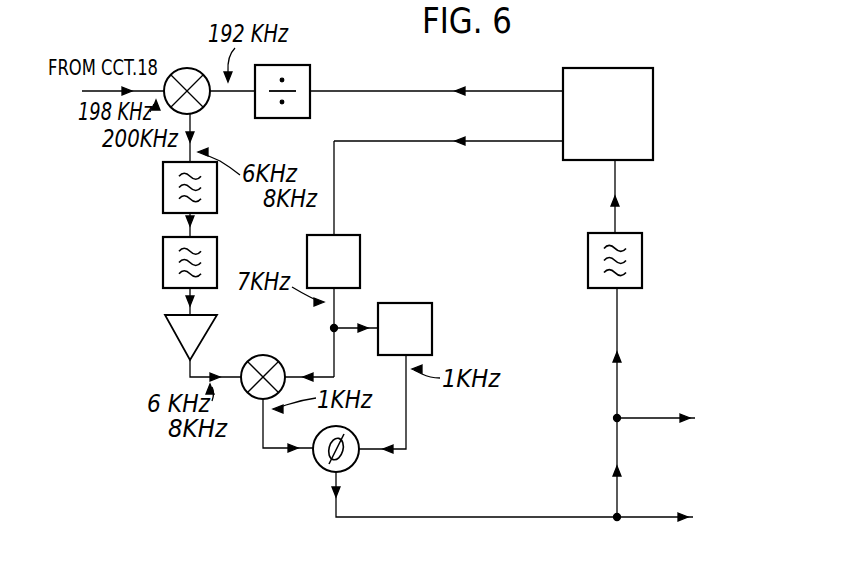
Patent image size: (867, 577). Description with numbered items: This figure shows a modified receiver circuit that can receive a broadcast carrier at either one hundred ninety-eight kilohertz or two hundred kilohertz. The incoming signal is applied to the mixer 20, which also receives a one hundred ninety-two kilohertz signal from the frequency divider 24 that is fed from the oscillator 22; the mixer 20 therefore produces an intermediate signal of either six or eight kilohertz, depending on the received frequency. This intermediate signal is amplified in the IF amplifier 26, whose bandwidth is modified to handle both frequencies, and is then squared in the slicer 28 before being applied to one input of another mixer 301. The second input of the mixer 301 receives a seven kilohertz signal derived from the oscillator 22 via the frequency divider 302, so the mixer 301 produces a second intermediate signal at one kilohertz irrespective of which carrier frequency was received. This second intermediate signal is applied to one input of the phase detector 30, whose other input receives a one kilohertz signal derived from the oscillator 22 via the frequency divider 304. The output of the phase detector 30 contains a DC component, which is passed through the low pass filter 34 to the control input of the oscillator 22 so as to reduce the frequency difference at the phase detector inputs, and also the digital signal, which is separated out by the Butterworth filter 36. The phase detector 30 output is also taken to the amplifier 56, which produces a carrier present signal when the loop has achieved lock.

The mixer 20 is at (199, 108).
The frequency divider 24 is at (296, 65).
The IF amplifier 26 is at (163, 200).
The slicer 28 is at (188, 332).
The oscillator 22 is at (575, 161).
The low pass filter 34 is at (642, 253).
The frequency divider 302 is at (360, 243).
The frequency divider 304 is at (430, 305).
The mixer 301 is at (273, 347).
The phase detector 30 is at (317, 458).
The amplifier 56 is at (693, 420).
The Butterworth filter 36 is at (681, 518).